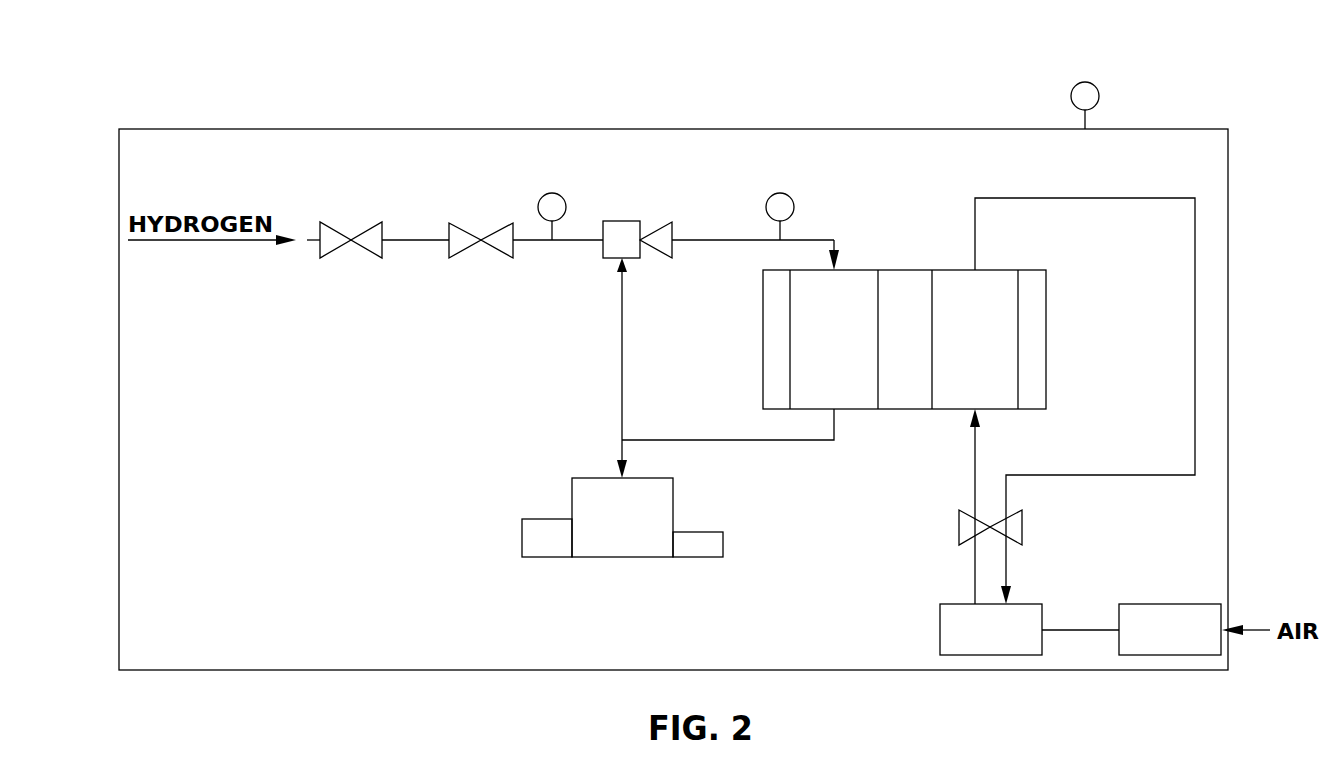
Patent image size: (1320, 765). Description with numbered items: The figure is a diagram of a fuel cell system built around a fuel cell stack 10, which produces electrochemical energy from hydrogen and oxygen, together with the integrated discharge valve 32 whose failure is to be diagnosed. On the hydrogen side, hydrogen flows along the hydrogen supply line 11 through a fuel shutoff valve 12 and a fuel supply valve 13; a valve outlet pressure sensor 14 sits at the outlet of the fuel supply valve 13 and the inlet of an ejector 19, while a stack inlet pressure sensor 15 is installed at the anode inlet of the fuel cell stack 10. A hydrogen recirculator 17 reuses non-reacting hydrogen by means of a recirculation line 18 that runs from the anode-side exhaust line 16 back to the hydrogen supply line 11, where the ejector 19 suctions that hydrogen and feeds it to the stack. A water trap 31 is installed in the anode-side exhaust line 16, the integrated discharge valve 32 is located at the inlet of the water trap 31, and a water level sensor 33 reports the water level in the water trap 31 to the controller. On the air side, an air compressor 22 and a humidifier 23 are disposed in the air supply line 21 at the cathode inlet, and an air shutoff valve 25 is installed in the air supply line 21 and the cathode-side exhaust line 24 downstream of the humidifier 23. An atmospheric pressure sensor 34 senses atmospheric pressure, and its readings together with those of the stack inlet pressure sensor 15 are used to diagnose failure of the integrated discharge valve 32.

The fuel cell stack 10 is at (900, 411).
The hydrogen supply line 11 is at (415, 243).
The fuel shutoff valve 12 is at (335, 222).
The fuel supply valve 13 is at (463, 228).
The valve outlet pressure sensor 14 is at (562, 196).
The stack inlet pressure sensor 15 is at (790, 196).
The anode-side exhaust line 16 is at (815, 443).
The hydrogen recirculator 17 is at (604, 266).
The recirculation line 18 is at (620, 398).
The ejector 19 is at (630, 221).
The air supply line 21 is at (973, 577).
The air compressor 22 is at (1165, 604).
The humidifier 23 is at (940, 630).
The cathode-side exhaust line 24 is at (1195, 370).
The air shutoff valve 25 is at (1024, 527).
The water trap 31 is at (675, 489).
The integrated discharge valve 32 is at (520, 540).
The water level sensor 33 is at (727, 540).
The atmospheric pressure sensor 34 is at (1095, 84).